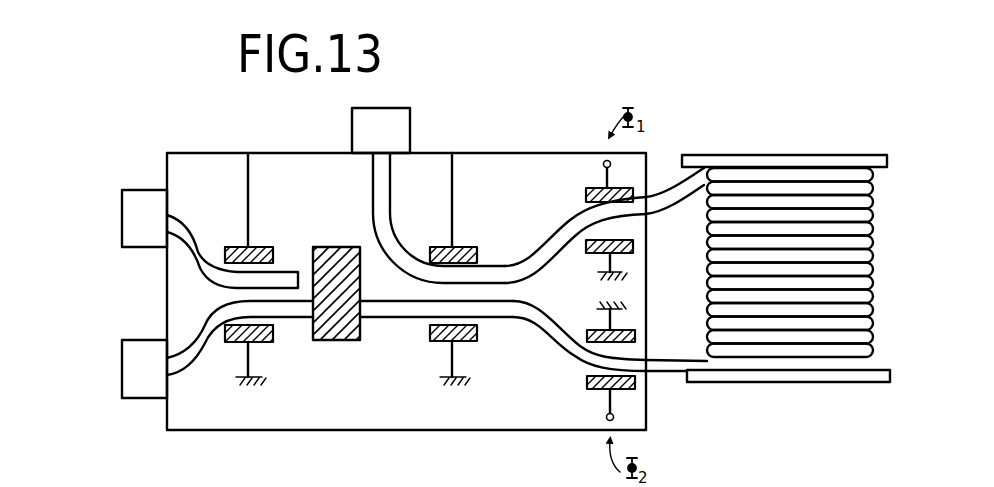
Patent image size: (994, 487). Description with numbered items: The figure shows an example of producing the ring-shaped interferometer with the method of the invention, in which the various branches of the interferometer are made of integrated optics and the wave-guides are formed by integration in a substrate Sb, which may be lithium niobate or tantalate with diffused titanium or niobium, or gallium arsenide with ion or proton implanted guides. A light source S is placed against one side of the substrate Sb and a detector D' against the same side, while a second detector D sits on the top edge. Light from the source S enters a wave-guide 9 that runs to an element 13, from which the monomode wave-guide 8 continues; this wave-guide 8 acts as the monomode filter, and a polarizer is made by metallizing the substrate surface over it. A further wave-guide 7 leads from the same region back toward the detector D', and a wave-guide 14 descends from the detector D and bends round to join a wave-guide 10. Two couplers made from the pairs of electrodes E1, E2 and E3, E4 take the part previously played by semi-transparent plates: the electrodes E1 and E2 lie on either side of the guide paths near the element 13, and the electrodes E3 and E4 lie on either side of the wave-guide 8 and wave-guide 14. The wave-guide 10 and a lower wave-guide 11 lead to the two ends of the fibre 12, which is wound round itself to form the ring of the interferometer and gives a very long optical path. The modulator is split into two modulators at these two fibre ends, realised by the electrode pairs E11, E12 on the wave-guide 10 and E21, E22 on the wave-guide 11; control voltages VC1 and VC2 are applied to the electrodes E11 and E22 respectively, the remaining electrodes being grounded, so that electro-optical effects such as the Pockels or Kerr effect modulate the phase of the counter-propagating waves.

The substrate Sb is at (482, 410).
The detector D' is at (95, 184).
The detector D is at (312, 119).
The light source S is at (155, 334).
The waveguide 7 is at (182, 215).
The waveguide 9 is at (190, 367).
The monomode wave-guide 8 is at (383, 318).
The waveguide 10 is at (562, 240).
The waveguide 11 is at (558, 340).
The fibre 12 is at (675, 213).
The polarizer / coupler element 13 is at (322, 341).
The waveguide 14 is at (389, 208).
The electrode E1 is at (262, 343).
The electrode E2 is at (256, 246).
The electrode E3 is at (466, 342).
The electrode E4 is at (460, 246).
The electrode E11 is at (586, 195).
The electrode E12 is at (586, 254).
The electrode E21 is at (646, 402).
The electrode E22 is at (572, 358).
The control voltage VC1 is at (584, 173).
The control voltage VC2 is at (606, 417).